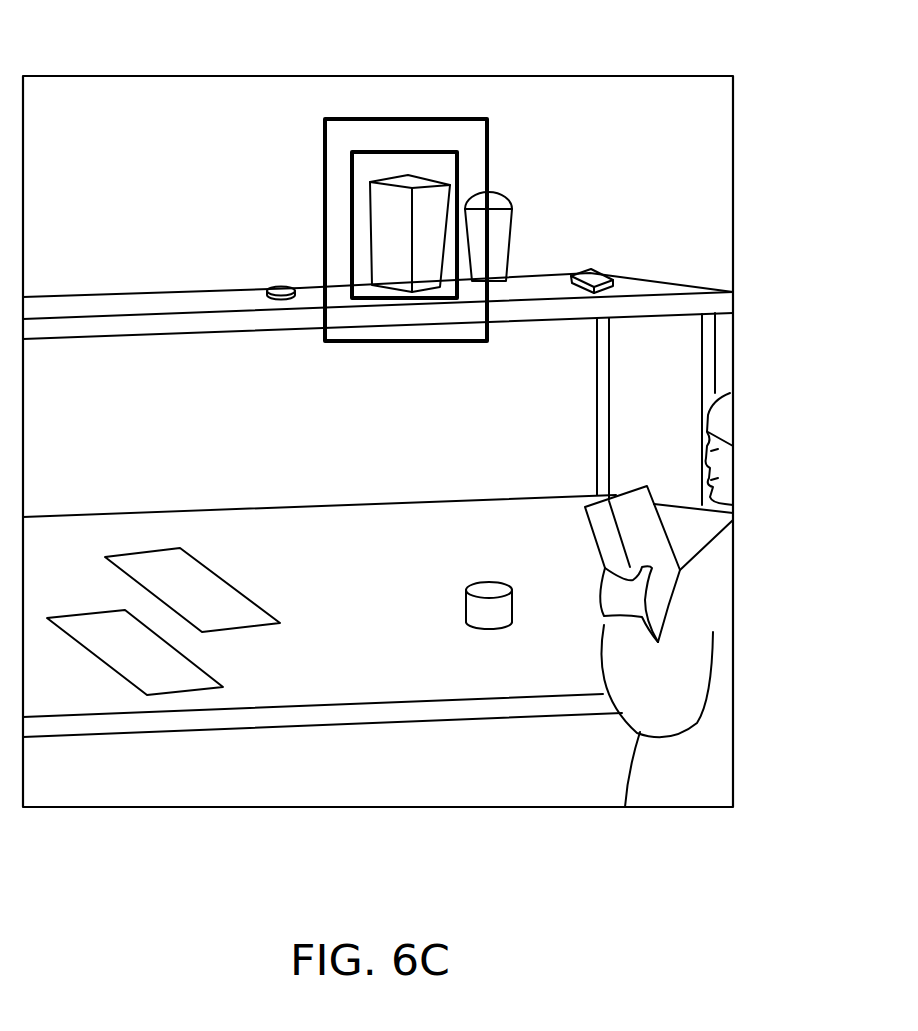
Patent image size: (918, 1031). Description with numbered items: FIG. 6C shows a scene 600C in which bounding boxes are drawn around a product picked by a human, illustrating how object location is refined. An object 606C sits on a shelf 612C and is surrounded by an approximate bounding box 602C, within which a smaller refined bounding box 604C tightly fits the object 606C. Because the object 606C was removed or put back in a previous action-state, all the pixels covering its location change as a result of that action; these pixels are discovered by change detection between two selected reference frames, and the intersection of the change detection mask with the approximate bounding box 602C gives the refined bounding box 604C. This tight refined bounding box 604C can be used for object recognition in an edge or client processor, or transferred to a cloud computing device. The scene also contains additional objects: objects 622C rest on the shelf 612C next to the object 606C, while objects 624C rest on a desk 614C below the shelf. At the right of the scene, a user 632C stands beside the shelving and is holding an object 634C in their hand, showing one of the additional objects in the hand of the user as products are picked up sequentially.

The environment / scene 600C is at (410, 921).
The approximate bounding box 602C is at (345, 118).
The refined bounding box 604C is at (413, 151).
The object 606C is at (382, 217).
The shelf 612C is at (155, 301).
The desk 614C is at (348, 680).
The objects 622C is at (588, 213).
The objects 624C is at (475, 662).
The user 632C is at (707, 593).
The object 634C is at (630, 528).